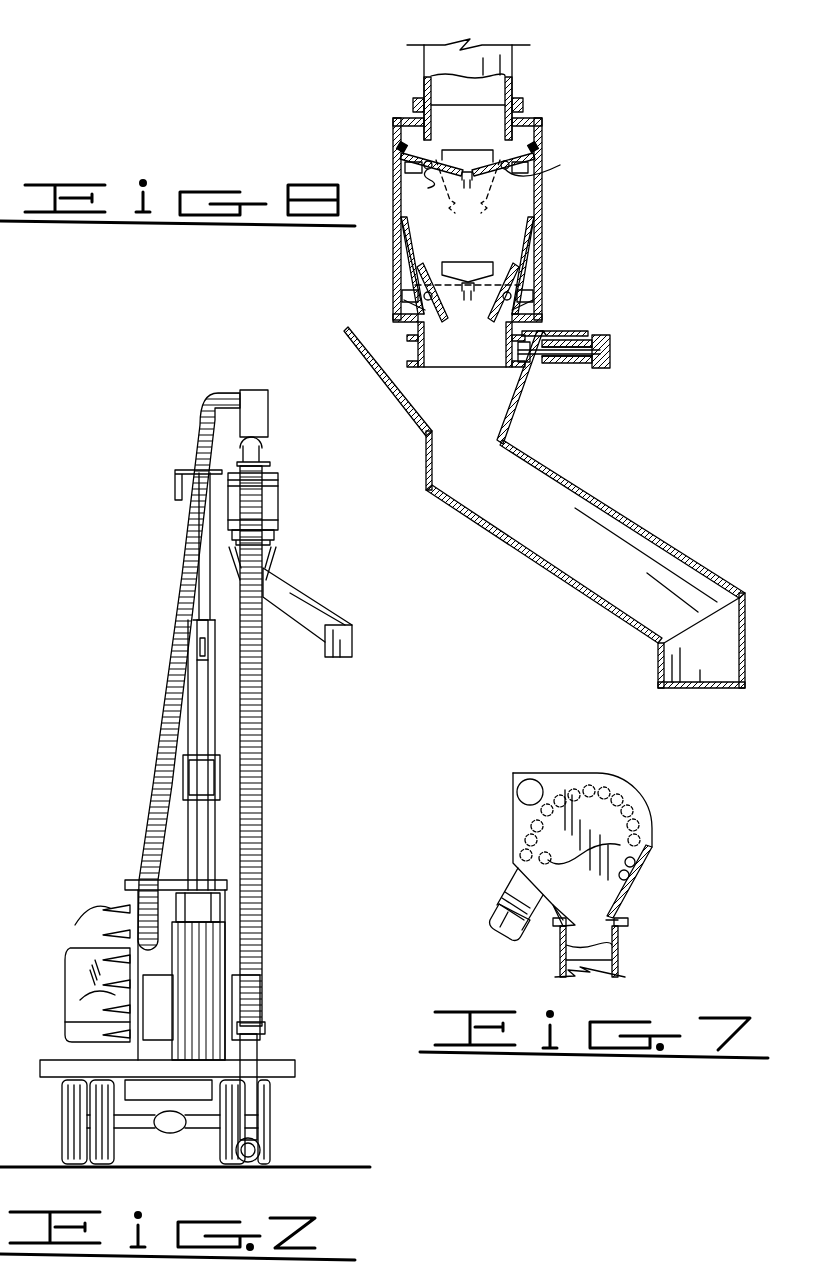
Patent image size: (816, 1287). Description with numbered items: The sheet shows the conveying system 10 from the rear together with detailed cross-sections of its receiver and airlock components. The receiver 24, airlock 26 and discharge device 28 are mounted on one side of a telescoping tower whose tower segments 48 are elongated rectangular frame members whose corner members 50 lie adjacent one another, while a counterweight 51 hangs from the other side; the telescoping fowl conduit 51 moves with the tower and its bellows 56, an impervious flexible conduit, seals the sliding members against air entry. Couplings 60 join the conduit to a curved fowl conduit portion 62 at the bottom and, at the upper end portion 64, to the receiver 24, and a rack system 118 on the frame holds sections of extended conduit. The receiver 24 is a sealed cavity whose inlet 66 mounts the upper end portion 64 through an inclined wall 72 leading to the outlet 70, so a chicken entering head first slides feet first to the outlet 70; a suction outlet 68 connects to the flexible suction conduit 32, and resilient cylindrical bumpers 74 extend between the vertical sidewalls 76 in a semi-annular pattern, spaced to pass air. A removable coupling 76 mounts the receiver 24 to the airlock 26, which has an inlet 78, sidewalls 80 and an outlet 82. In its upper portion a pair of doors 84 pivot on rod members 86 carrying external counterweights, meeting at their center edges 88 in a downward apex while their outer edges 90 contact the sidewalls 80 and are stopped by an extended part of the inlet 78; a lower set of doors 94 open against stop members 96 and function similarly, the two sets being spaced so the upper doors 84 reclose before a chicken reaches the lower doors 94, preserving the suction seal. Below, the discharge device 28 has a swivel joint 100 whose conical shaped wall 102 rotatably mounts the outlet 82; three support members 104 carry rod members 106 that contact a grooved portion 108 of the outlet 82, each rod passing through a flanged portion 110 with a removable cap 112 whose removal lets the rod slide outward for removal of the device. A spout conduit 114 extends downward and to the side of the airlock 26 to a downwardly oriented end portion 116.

In FIG. 2, the conveying system 10 is at (124, 780).
In FIG. 2, the receiver 24 is at (254, 378).
In FIG. 7, the receiver 24 is at (673, 821).
In FIG. 8, the airlock 26 is at (557, 212).
In FIG. 2, the airlock 26 is at (290, 507).
In FIG. 8, the discharge device 28 is at (544, 507).
In FIG. 2, the discharge device 28 is at (315, 602).
In FIG. 2, the suction conduit 32 is at (208, 421).
In FIG. 2, the tower segment 48 is at (237, 640).
In FIG. 2, the corner member 50 is at (216, 732).
In FIG. 2, the telescoping fowl conduit 51 is at (176, 487).
In FIG. 2, the bellows 56 is at (266, 865).
In FIG. 2, the coupling 60 is at (275, 456).
In FIG. 7, the coupling 60 is at (500, 902).
In FIG. 2, the curved fowl conduit portion 62 is at (262, 1112).
In FIG. 7, the upper end portion 64 is at (492, 927).
In FIG. 7, the inlet 66 is at (516, 890).
In FIG. 7, the suction outlet 68 is at (536, 780).
In FIG. 8, the outlet 70 is at (512, 90).
In FIG. 7, the outlet 70 is at (633, 910).
In FIG. 7, the inclined wall 72 is at (553, 928).
In FIG. 7, the bumper 74 is at (640, 870).
In FIG. 8, the vertical sidewall 76 is at (523, 105).
In FIG. 7, the vertical sidewall 76 is at (605, 820).
In FIG. 7, the inlet 78 is at (623, 948).
In FIG. 8, the sidewall 80 is at (542, 190).
In FIG. 8, the outlet 82 is at (546, 312).
In FIG. 8, the door 84 is at (492, 138).
In FIG. 8, the rod member 86 is at (568, 155).
In FIG. 8, the center edge 88 is at (468, 192).
In FIG. 8, the outer edge 90 is at (392, 143).
In FIG. 8, the door 94 is at (491, 270).
In FIG. 8, the stop member 96 is at (415, 252).
In FIG. 8, the swivel joint 100 is at (410, 421).
In FIG. 8, the conical shaped wall 102 is at (393, 376).
In FIG. 8, the support member 104 is at (627, 370).
In FIG. 8, the rod member 106 is at (548, 350).
In FIG. 8, the grooved portion 108 is at (485, 384).
In FIG. 8, the flanged portion 110 is at (585, 365).
In FIG. 8, the removable cap 112 is at (612, 350).
In FIG. 8, the spout conduit 114 is at (668, 526).
In FIG. 2, the spout conduit 114 is at (327, 600).
In FIG. 8, the end portion 116 is at (650, 667).
In FIG. 2, the end portion 116 is at (359, 638).
In FIG. 2, the rack system 118 is at (83, 1002).